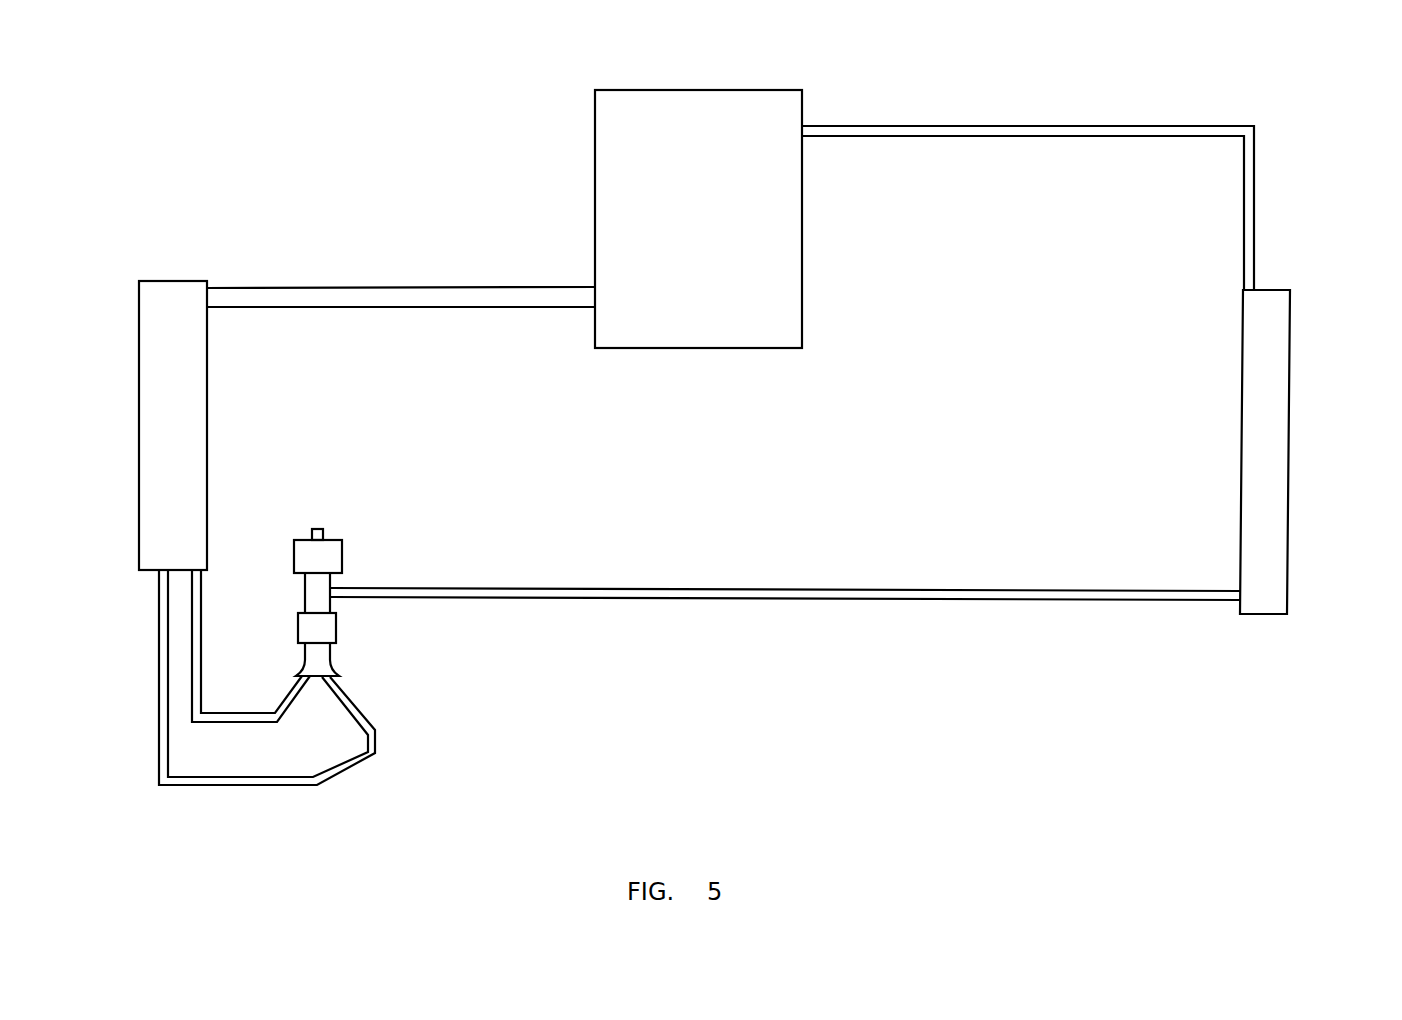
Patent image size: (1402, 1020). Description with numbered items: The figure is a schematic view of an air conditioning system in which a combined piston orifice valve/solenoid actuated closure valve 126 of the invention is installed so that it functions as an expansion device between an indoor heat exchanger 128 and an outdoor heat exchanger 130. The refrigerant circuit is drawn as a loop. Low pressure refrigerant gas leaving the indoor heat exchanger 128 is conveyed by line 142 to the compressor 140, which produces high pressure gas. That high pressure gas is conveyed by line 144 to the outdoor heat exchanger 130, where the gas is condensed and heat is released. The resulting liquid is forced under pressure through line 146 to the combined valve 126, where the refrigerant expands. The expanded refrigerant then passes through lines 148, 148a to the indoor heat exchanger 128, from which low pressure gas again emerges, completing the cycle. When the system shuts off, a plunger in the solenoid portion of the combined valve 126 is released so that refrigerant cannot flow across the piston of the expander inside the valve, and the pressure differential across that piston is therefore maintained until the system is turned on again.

The combined piston orifice valve/solenoid actuated closure valve 126 is at (335, 596).
The indoor heat exchanger 128 is at (160, 280).
The outdoor heat exchanger 130 is at (1263, 320).
The compressor 140 is at (703, 117).
The line 142 is at (430, 287).
The line 144 is at (1140, 130).
The line 146 is at (1005, 595).
The line 148 is at (220, 717).
The line 148a is at (215, 780).